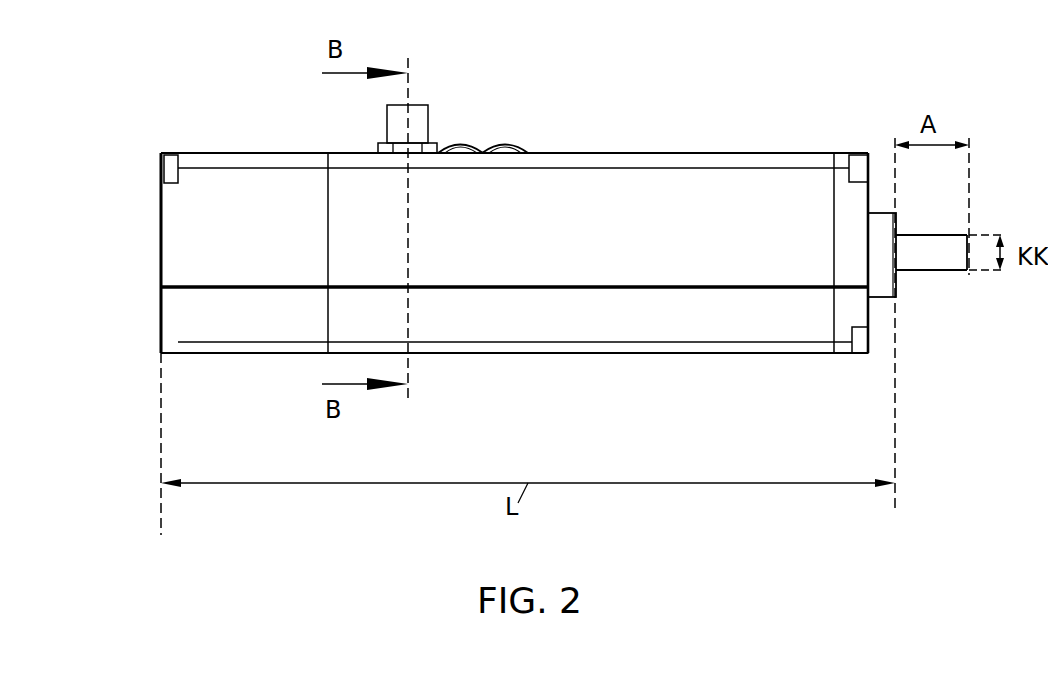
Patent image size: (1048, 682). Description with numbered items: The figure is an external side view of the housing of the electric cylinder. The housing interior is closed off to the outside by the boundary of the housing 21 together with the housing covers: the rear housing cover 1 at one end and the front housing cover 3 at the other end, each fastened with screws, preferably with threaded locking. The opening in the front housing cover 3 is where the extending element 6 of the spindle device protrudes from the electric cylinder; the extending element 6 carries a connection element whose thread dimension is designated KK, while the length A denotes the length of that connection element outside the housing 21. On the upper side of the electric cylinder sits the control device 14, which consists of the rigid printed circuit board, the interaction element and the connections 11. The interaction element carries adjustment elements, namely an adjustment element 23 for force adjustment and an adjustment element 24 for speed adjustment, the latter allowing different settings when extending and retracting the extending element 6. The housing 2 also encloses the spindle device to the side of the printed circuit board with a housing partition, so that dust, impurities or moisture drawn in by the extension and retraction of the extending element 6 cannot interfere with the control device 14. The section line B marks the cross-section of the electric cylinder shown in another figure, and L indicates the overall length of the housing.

The rear housing cover 1 is at (187, 153).
The housing 2 is at (727, 330).
The front housing cover 3 is at (846, 157).
The extending element 6 is at (881, 213).
The connections 11 is at (408, 127).
The control device 14 is at (553, 128).
The housing 21 is at (511, 372).
The adjustment element for force adjustment 23 is at (468, 147).
The adjustment element for speed adjustment 24 is at (517, 147).